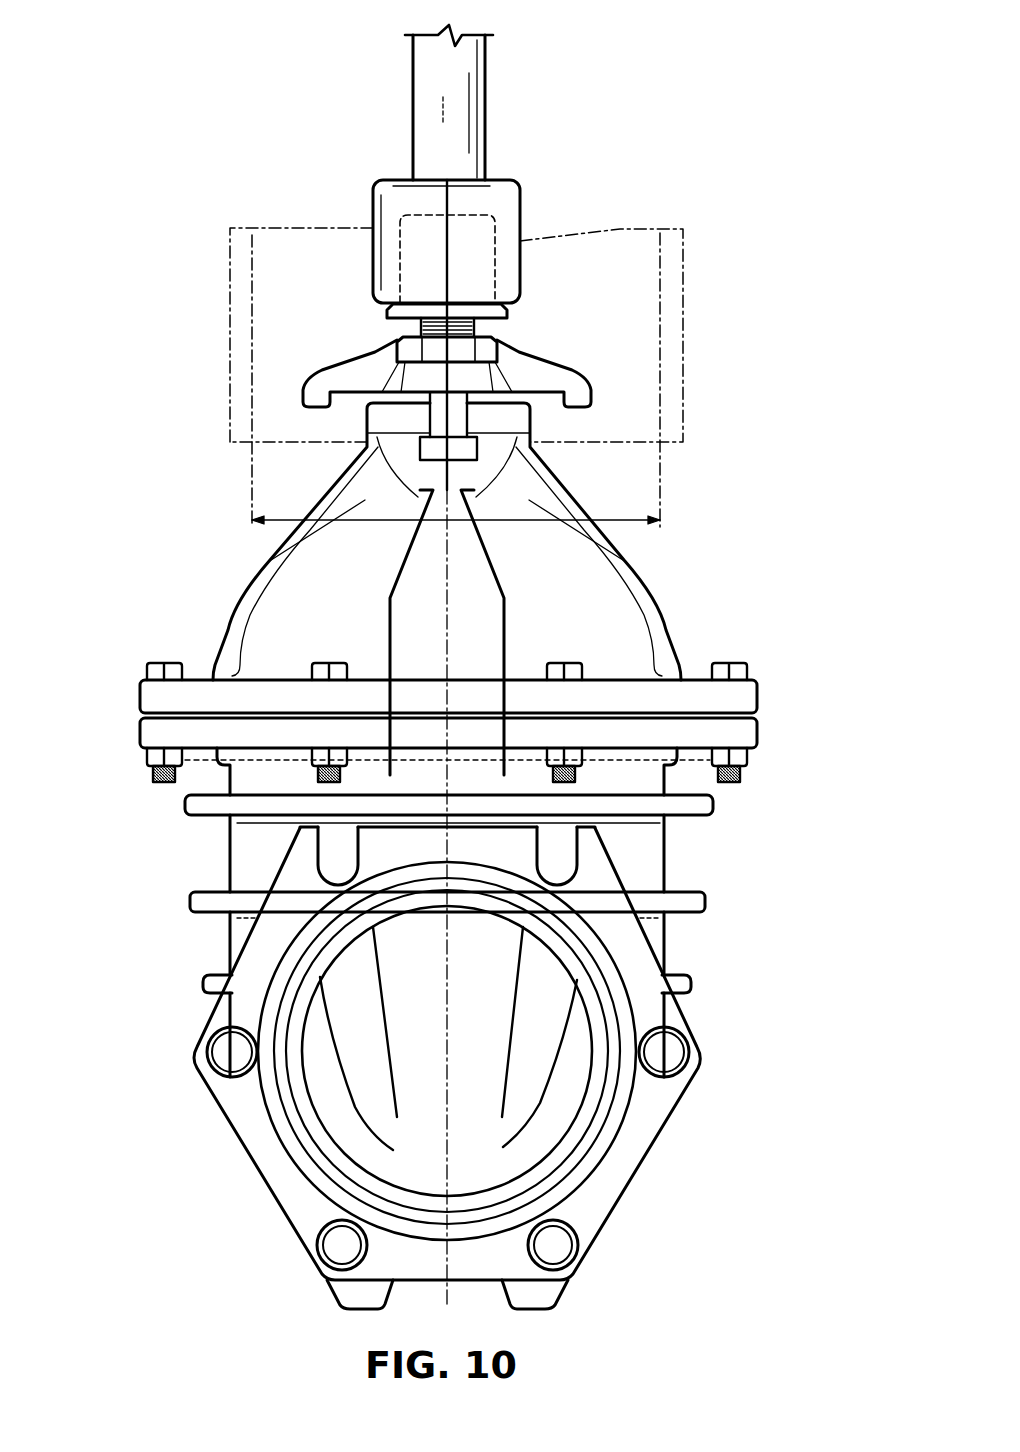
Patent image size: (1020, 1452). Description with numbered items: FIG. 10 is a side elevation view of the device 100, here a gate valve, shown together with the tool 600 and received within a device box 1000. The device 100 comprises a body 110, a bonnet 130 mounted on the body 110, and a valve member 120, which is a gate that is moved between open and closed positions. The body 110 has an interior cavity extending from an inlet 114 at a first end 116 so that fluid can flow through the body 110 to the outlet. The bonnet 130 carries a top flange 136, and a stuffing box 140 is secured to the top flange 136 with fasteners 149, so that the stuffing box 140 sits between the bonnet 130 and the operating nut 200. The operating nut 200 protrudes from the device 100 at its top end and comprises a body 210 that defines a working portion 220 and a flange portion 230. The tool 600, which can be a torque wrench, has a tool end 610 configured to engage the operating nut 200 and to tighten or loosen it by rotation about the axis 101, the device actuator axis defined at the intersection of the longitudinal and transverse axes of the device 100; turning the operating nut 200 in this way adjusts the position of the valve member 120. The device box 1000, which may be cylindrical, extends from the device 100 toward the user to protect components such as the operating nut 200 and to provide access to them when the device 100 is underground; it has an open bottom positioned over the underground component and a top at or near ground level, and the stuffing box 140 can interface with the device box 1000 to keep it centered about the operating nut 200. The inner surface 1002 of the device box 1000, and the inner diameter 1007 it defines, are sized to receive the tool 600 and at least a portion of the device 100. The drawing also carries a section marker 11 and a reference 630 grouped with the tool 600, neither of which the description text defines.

The section line 11- 11 is at (493, 178).
The device 100 is at (778, 483).
The device actuator axis 101 is at (447, 1160).
The body 110 is at (655, 848).
The inlet 114 is at (636, 1100).
The first end 116 is at (665, 1008).
The valve member 120 is at (530, 1073).
The bonnet 130 is at (233, 607).
The top flange 136 is at (367, 413).
The stuffing box 140 is at (512, 360).
The fasteners 149 is at (482, 333).
The operating nut 200 is at (273, 323).
The body 210 is at (273, 323).
The flange portion 230 is at (387, 313).
The working portion 220 is at (400, 247).
The tool 600 is at (365, 102).
The actuator stem 630 is at (418, 97).
The tool end 610 is at (372, 203).
The device box 1000 is at (683, 271).
The inner surface 1002 is at (652, 289).
The inner diameter 1007 is at (508, 528).